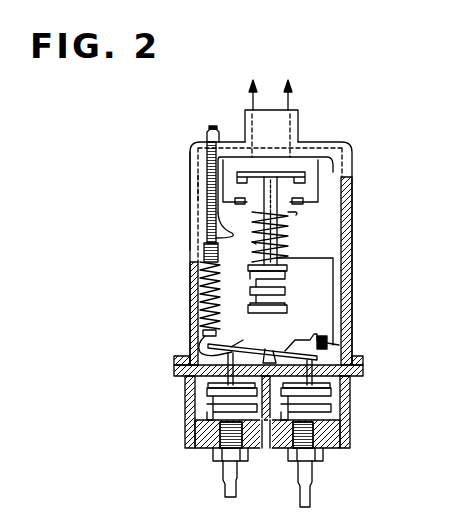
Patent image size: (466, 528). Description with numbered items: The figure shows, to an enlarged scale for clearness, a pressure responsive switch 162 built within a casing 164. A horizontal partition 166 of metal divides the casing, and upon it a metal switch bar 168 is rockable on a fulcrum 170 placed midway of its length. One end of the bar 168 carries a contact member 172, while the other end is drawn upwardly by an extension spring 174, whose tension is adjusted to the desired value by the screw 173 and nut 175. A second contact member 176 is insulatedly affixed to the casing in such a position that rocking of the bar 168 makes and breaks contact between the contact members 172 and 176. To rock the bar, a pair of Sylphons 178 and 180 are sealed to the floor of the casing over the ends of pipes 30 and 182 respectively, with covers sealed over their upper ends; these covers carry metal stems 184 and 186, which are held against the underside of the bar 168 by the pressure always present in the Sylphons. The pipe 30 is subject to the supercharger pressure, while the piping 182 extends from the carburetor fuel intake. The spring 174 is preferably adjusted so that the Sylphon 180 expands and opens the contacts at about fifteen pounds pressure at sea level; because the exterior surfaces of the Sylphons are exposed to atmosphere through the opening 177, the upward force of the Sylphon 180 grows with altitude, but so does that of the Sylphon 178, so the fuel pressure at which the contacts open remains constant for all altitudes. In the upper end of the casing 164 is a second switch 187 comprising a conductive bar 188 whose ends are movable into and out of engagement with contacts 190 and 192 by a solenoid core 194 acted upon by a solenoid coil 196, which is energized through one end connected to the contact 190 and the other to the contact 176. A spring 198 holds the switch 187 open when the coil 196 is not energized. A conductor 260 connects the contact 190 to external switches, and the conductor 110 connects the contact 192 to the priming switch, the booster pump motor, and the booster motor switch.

The pipe 30 is at (222, 488).
The conductor 110 is at (251, 105).
The pressure responsive switch 162 is at (185, 215).
The casing 164 is at (190, 157).
The horizontal partition 166 is at (174, 369).
The switch bar 168 is at (205, 333).
The fulcrum 170 is at (268, 346).
The contact member 172 is at (322, 335).
The screw 173 is at (198, 187).
The extension spring 174 is at (200, 290).
The nut 175 is at (208, 134).
The second contact member 176 is at (330, 351).
The opening 177 is at (262, 450).
The Sylphon 178 is at (207, 403).
The Sylphon 180 is at (331, 404).
The pipe 182 is at (313, 492).
The stem 184 is at (200, 349).
The stem 186 is at (349, 389).
The second switch 187 is at (337, 124).
The conductive bar 188 is at (327, 177).
The contact 190 is at (297, 214).
The contact 192 is at (251, 203).
The solenoid core 194 is at (253, 252).
The solenoid coil 196 is at (289, 230).
The spring 198 is at (286, 290).
The conductor 260 is at (290, 103).